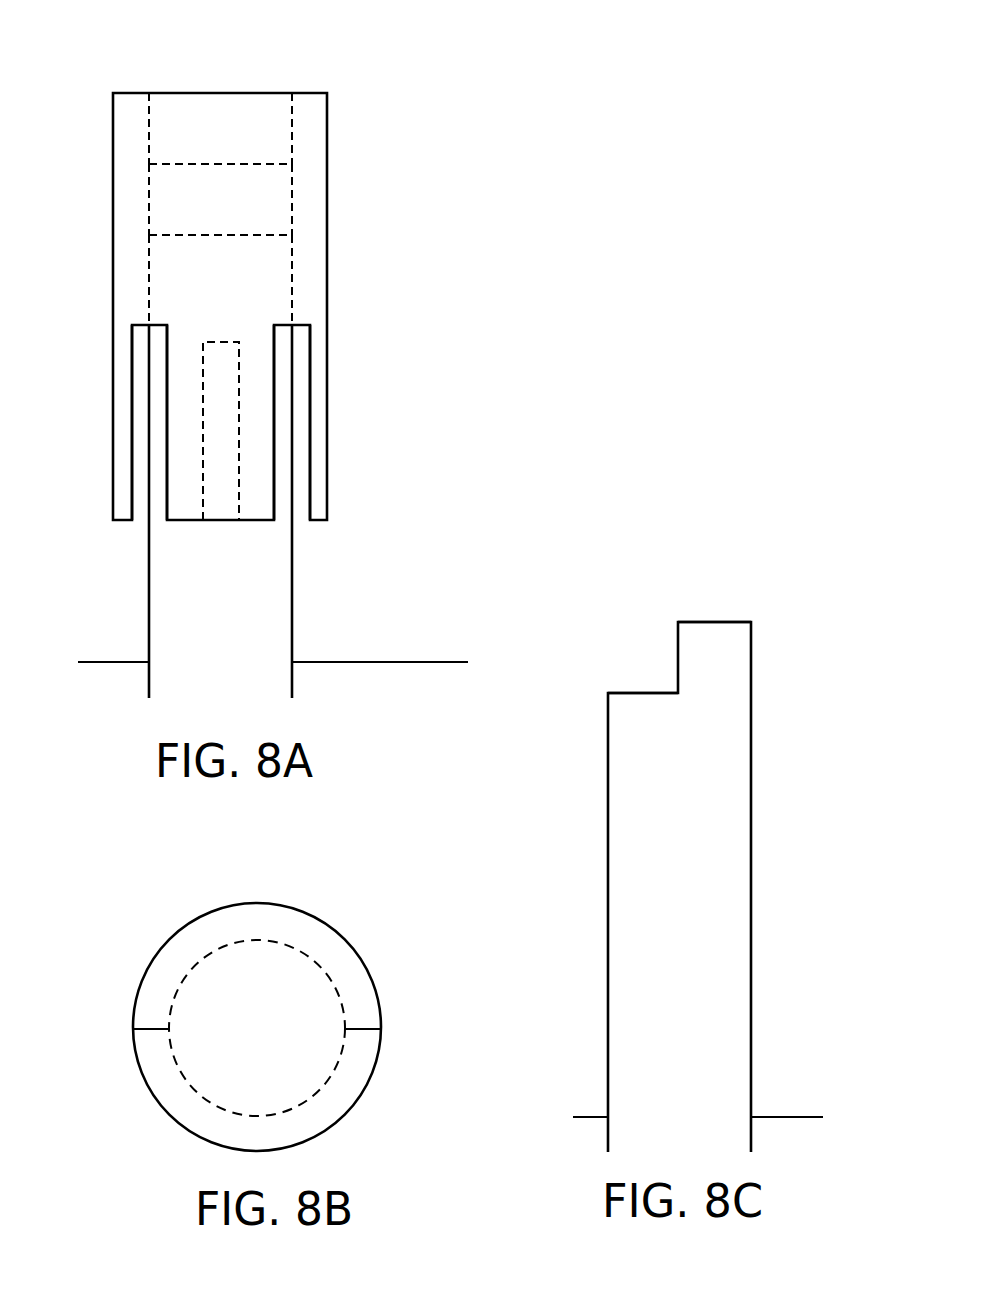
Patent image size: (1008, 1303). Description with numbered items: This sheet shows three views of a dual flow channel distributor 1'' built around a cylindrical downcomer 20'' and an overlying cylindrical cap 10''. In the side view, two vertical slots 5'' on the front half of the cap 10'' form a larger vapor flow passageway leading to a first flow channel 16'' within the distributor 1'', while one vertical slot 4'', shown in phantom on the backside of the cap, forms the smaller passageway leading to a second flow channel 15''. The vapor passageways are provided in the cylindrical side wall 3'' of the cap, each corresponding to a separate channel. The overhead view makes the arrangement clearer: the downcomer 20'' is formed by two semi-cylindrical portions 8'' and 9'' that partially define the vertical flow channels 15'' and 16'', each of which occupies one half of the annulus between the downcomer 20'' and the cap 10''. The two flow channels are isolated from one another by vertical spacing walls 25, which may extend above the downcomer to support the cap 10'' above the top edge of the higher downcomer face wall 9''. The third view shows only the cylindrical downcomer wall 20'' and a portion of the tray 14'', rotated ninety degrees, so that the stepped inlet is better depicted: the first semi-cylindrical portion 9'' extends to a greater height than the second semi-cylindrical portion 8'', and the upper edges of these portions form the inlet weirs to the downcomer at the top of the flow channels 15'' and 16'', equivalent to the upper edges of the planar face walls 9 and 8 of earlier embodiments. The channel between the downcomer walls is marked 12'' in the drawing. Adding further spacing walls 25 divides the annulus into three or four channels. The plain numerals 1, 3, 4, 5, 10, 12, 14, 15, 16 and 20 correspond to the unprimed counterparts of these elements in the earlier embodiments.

In FIG. 8A, the dual flow channel distributor 1'' is at (468, 169).
In FIG. 8A, the cylindrical side wall 3'' is at (196, 306).
In FIG. 8B, the cylindrical side wall 3'' is at (257, 1011).
In FIG. 8A, the vertical slot 4'' is at (298, 388).
In FIG. 8A, the vertical slots 5'' is at (234, 422).
In FIG. 8A, the second semi-cylindrical portion 8'' is at (276, 225).
In FIG. 8B, the second semi-cylindrical portion 8'' is at (379, 936).
In FIG. 8C, the second semi-cylindrical portion 8'' is at (631, 658).
In FIG. 8A, the first semi-cylindrical portion 9'' is at (178, 199).
In FIG. 8B, the first semi-cylindrical portion 9'' is at (165, 1138).
In FIG. 8C, the first semi-cylindrical portion 9'' is at (714, 592).
In FIG. 8A, the cylindrical cap 10'' is at (403, 75).
In FIG. 8A, the channel 12'' is at (224, 665).
In FIG. 8C, the channel 12'' is at (681, 1125).
In FIG. 8A, the tray 14'' is at (273, 637).
In FIG. 8C, the tray 14'' is at (705, 1088).
In FIG. 8B, the second flow channel 15'' is at (178, 899).
In FIG. 8B, the first flow channel 16'' is at (383, 1133).
In FIG. 8A, the cylindrical downcomer 20'' is at (283, 511).
In FIG. 8B, the cylindrical downcomer 20'' is at (323, 1028).
In FIG. 8C, the cylindrical downcomer 20'' is at (741, 887).
In FIG. 8A, the vertical spacing walls 25 is at (308, 112).
In FIG. 8B, the vertical spacing walls 25 is at (150, 1027).
In FIG. 8A, the heat pipe assembly 1 is at (468, 169).
In FIG. 8A, the outer tube / body 3 is at (196, 306).
In FIG. 8B, the outer tube / body 3 is at (257, 1011).
In FIG. 8A, the inner bore 4 is at (298, 388).
In FIG. 8A, the slots 5 is at (234, 422).
In FIG. 8A, the planar face wall 8 is at (276, 225).
In FIG. 8B, the planar face wall 8 is at (379, 936).
In FIG. 8C, the planar face wall 8 is at (631, 658).
In FIG. 8A, the planar face wall 9 is at (178, 199).
In FIG. 8B, the planar face wall 9 is at (165, 1138).
In FIG. 8C, the planar face wall 9 is at (714, 592).
In FIG. 8A, the top end 10 is at (403, 75).
In FIG. 8A, the channel 12 is at (224, 665).
In FIG. 8C, the channel 12 is at (681, 1125).
In FIG. 8A, the base plane 14 is at (273, 637).
In FIG. 8C, the base plane 14 is at (705, 1088).
In FIG. 8B, the first wall section 15 is at (178, 899).
In FIG. 8B, the second wall section 16 is at (383, 1133).
In FIG. 8A, the inner tube 20 is at (283, 511).
In FIG. 8B, the inner tube 20 is at (323, 1028).
In FIG. 8C, the inner tube 20 is at (741, 887).